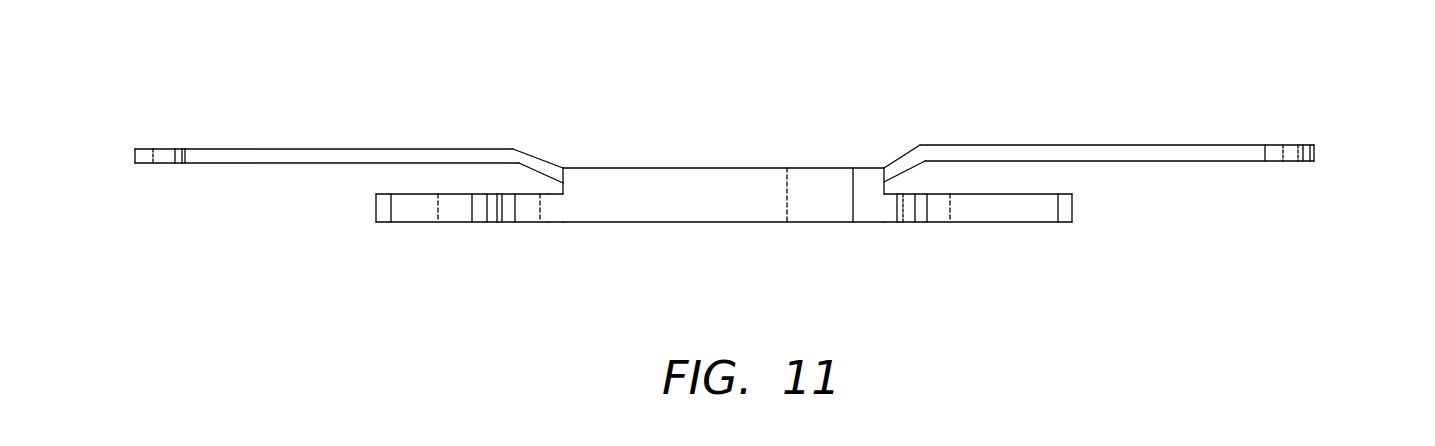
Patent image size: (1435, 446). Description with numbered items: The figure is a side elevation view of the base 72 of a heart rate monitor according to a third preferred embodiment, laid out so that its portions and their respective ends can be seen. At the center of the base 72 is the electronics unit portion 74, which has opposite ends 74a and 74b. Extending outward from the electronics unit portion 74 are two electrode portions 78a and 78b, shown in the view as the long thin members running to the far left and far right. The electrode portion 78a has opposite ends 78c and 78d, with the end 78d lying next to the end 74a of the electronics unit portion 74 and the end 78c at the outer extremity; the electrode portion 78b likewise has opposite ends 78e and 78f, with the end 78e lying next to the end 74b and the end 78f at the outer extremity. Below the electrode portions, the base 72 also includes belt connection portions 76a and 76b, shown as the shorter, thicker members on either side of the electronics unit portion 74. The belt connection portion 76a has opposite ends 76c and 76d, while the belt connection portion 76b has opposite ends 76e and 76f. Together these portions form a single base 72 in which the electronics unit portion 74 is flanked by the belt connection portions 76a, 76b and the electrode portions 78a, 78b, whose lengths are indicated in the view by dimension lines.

The base 72 is at (137, 212).
The electronics unit portion 74 is at (563, 295).
The end of electronics unit portion 74a is at (569, 157).
The end of electronics unit portion 74b is at (880, 157).
The belt connection portion 76a is at (377, 232).
The belt connection portion 76b is at (1072, 228).
The end of belt connection portion 76c is at (377, 208).
The end of belt connection portion 76d is at (573, 227).
The end of belt connection portion 76e is at (873, 227).
The end of belt connection portion 76f is at (1075, 207).
The electrode portion 78a is at (135, 143).
The electrode portion 78b is at (1314, 135).
The end of electrode portion 78c is at (135, 155).
The end of electrode portion 78d is at (550, 153).
The end of electrode portion 78e is at (898, 153).
The end of electrode portion 78f is at (1318, 152).